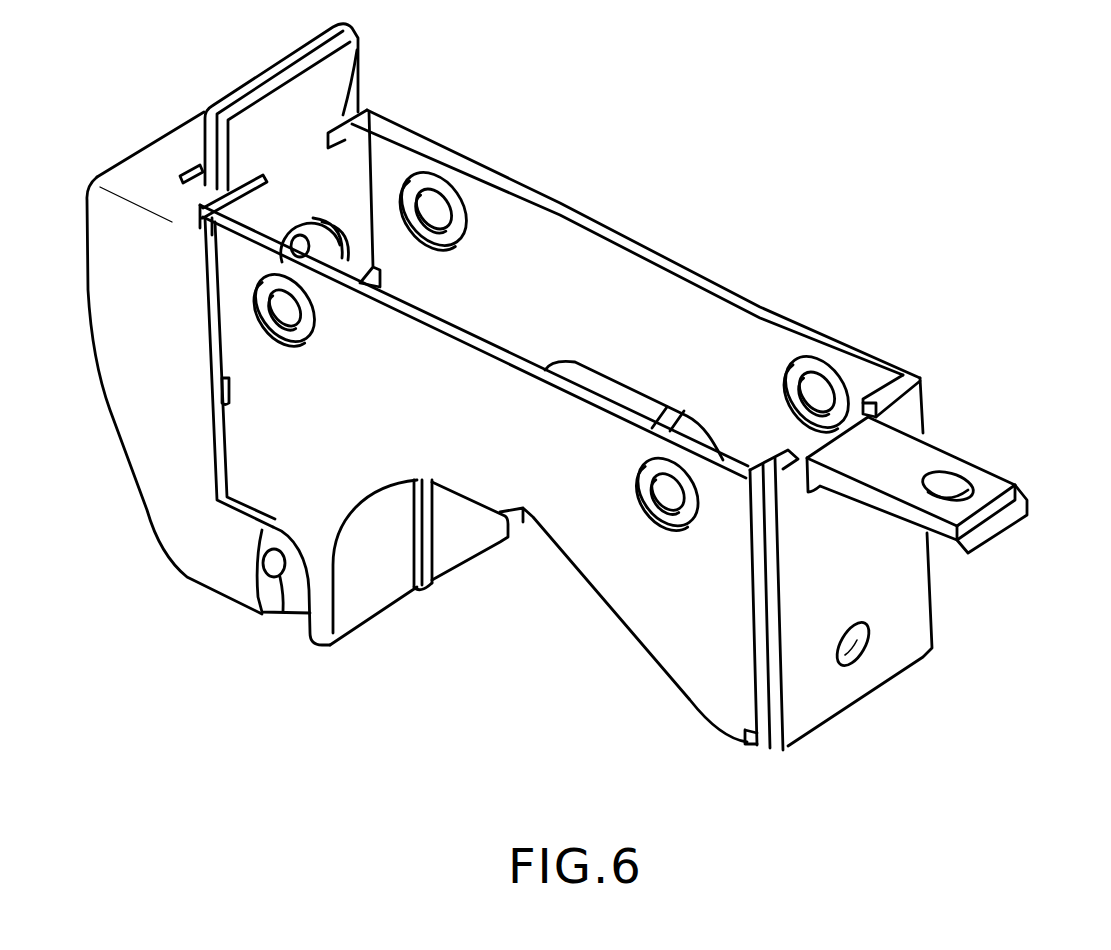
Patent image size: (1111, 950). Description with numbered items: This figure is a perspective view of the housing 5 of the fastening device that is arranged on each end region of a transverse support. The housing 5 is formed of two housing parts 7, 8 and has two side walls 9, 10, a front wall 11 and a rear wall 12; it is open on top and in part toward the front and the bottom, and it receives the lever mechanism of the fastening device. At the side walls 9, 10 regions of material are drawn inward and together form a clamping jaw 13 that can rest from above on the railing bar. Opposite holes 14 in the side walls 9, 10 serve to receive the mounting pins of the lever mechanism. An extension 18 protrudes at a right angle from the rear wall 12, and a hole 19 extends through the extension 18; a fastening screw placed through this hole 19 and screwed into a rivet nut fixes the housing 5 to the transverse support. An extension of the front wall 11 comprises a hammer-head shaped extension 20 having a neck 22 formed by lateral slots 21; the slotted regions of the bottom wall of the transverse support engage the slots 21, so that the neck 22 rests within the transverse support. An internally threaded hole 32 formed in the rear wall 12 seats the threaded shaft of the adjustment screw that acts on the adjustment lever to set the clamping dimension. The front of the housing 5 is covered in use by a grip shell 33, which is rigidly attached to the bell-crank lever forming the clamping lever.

The housing 5 is at (798, 223).
The housing part 7 is at (425, 316).
The housing part 8 is at (578, 213).
The side wall 9 is at (630, 282).
The side wall 10 is at (690, 618).
The front wall 11 is at (323, 196).
The rear wall 12 is at (870, 577).
The clamping jaw 13 is at (370, 585).
The holes 14 is at (815, 393).
The extension 18 is at (915, 457).
The hole 19 is at (953, 495).
The hammer-head shaped extension 20 is at (243, 143).
The lateral slots 21 is at (358, 45).
The neck 22 is at (303, 162).
The internally threaded hole 32 is at (857, 663).
The grip shell 33 is at (163, 462).